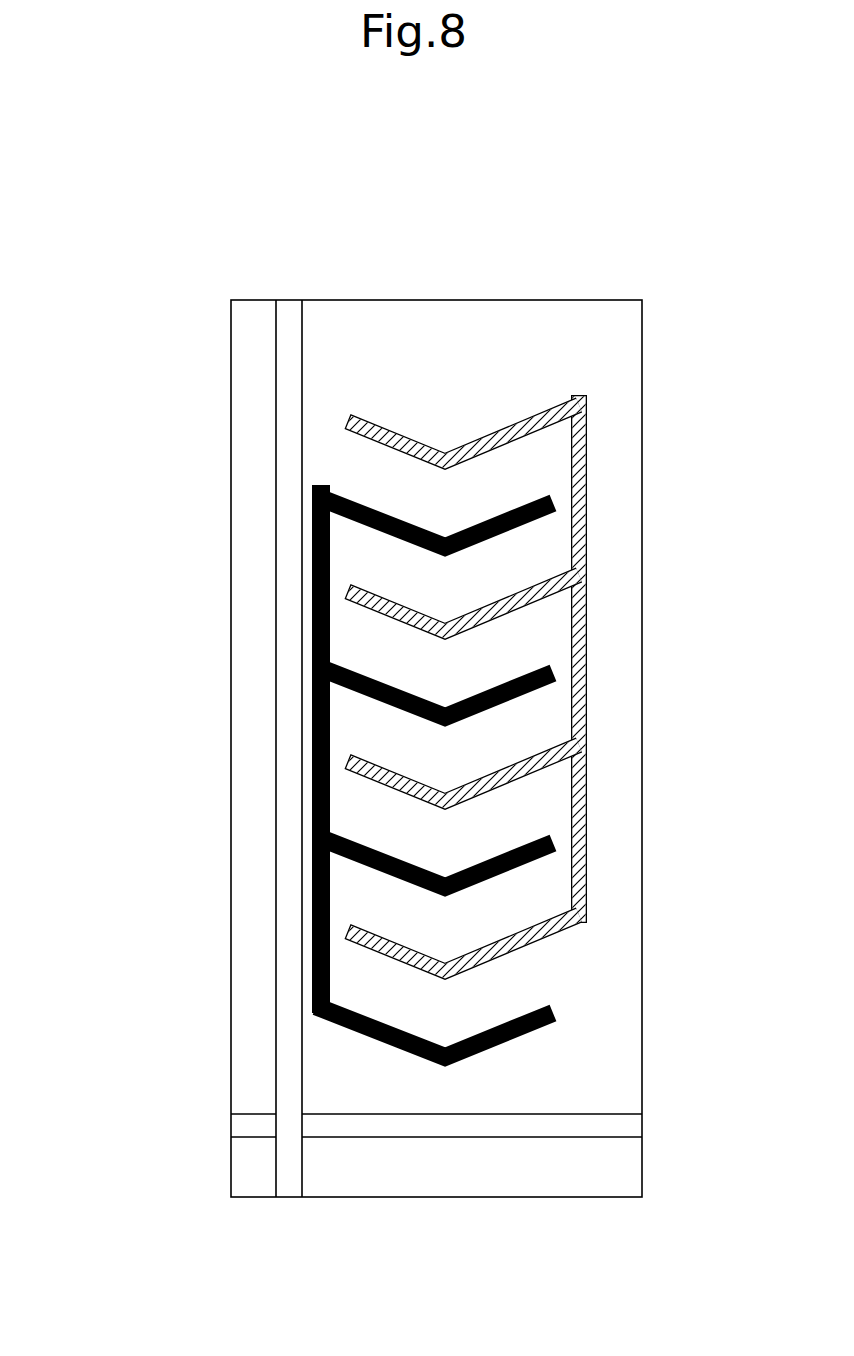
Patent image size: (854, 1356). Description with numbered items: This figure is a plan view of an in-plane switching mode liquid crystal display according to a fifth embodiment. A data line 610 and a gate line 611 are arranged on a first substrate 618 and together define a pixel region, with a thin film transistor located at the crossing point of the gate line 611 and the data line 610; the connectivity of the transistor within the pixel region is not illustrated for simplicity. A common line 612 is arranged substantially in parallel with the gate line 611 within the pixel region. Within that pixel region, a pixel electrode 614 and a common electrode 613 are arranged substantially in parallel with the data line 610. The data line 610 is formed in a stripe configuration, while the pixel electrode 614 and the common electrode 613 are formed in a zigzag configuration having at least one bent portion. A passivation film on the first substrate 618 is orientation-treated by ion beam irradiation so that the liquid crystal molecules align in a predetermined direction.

The first substrate 618 is at (417, 300).
The data line 610 is at (291, 682).
The gate line 611 is at (438, 1123).
The common line 612 is at (572, 494).
The common electrode 613 is at (522, 598).
The pixel electrode 614 is at (556, 846).